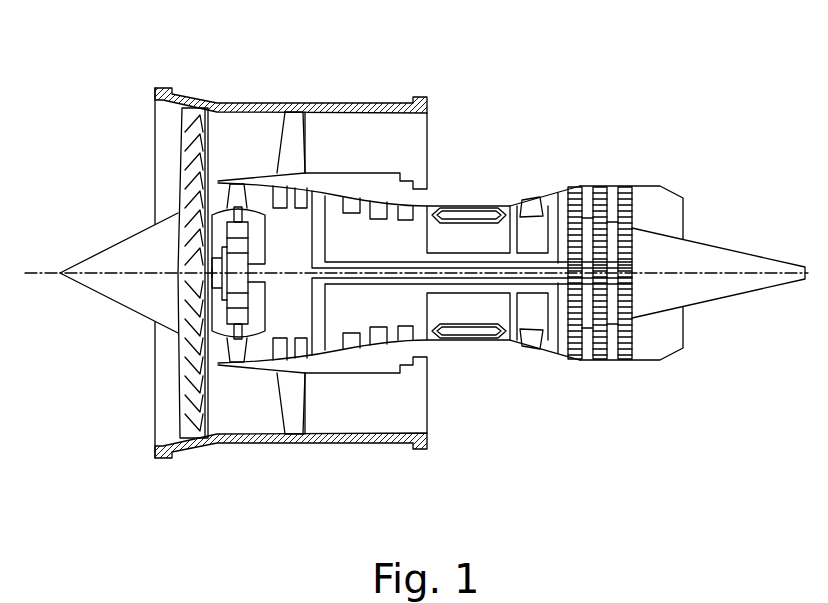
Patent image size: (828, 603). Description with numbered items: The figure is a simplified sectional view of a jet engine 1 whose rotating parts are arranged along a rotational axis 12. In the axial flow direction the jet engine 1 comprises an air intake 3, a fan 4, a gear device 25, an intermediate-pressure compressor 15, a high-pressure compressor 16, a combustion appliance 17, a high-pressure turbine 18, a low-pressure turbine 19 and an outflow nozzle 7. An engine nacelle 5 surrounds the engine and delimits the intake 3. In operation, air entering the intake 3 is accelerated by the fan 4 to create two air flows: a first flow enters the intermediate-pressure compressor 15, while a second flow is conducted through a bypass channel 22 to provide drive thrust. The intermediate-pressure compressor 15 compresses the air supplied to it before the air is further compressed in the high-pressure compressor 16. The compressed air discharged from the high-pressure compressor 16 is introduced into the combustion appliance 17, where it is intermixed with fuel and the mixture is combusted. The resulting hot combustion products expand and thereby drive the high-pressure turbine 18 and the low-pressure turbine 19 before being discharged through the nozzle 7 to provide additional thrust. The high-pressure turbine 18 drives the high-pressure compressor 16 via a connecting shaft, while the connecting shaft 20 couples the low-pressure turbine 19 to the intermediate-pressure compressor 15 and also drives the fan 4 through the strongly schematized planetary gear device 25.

The jet engine 1 is at (683, 114).
The air intake 3 is at (133, 130).
The fan 4 is at (190, 405).
The engine nacelle 5 is at (365, 103).
The outflow nozzle 7 is at (676, 220).
The rotational axis 12 is at (44, 272).
The intermediate-pressure compressor 15 is at (300, 192).
The high-pressure compressor 16 is at (413, 230).
The combustion appliance 17 is at (467, 336).
The high-pressure turbine 18 is at (554, 200).
The low-pressure turbine 19 is at (599, 186).
The connecting shaft 20 is at (315, 285).
The bypass channel 22 is at (418, 131).
The gear device 25 is at (238, 332).